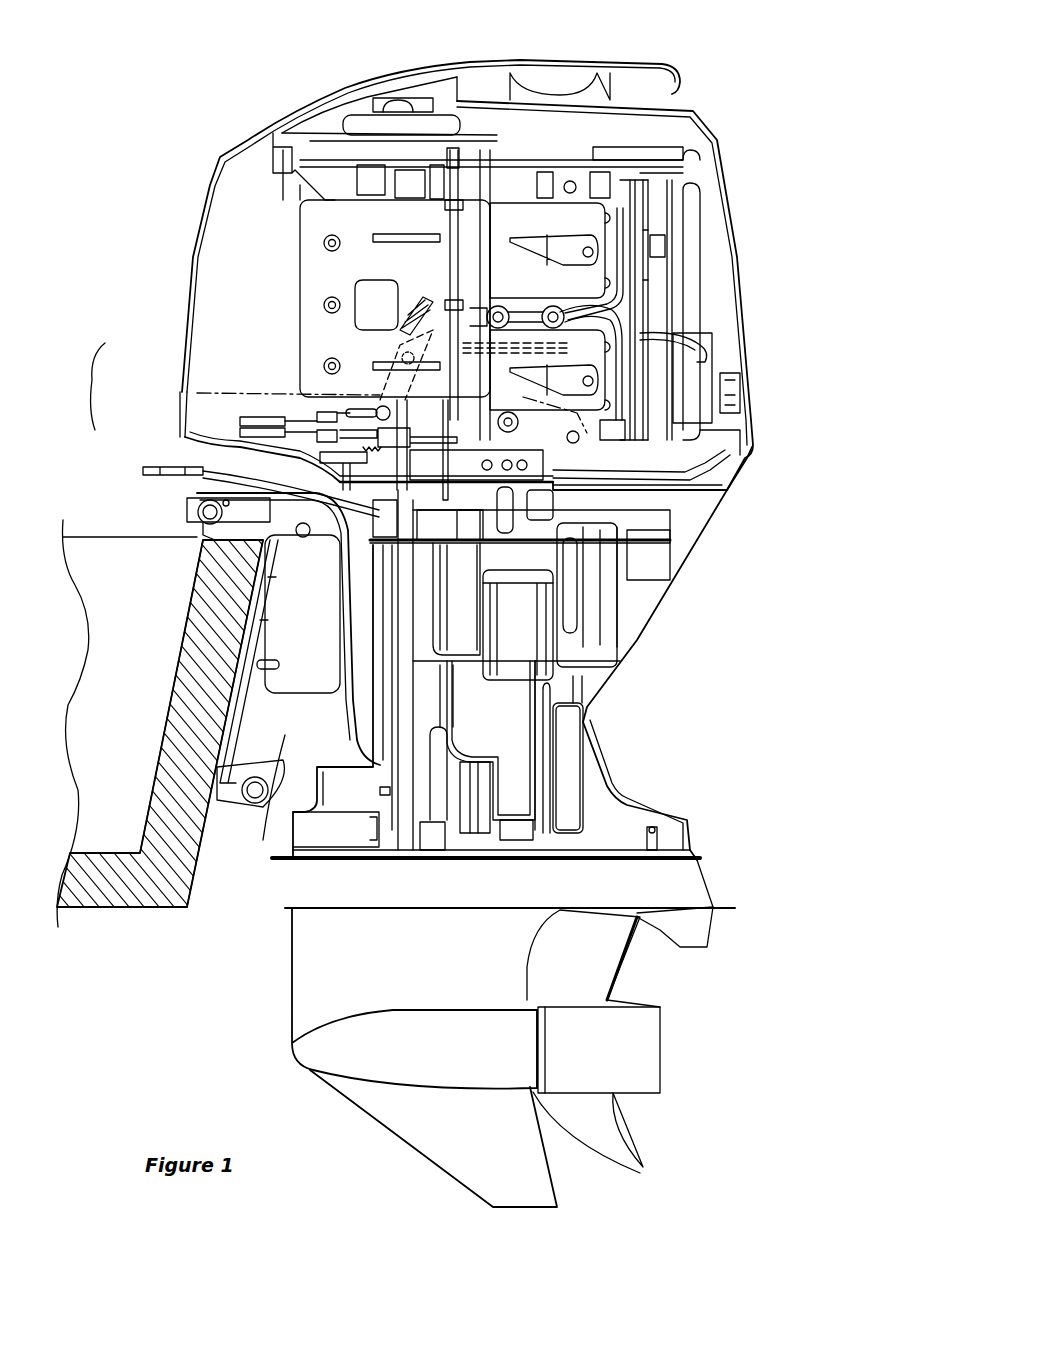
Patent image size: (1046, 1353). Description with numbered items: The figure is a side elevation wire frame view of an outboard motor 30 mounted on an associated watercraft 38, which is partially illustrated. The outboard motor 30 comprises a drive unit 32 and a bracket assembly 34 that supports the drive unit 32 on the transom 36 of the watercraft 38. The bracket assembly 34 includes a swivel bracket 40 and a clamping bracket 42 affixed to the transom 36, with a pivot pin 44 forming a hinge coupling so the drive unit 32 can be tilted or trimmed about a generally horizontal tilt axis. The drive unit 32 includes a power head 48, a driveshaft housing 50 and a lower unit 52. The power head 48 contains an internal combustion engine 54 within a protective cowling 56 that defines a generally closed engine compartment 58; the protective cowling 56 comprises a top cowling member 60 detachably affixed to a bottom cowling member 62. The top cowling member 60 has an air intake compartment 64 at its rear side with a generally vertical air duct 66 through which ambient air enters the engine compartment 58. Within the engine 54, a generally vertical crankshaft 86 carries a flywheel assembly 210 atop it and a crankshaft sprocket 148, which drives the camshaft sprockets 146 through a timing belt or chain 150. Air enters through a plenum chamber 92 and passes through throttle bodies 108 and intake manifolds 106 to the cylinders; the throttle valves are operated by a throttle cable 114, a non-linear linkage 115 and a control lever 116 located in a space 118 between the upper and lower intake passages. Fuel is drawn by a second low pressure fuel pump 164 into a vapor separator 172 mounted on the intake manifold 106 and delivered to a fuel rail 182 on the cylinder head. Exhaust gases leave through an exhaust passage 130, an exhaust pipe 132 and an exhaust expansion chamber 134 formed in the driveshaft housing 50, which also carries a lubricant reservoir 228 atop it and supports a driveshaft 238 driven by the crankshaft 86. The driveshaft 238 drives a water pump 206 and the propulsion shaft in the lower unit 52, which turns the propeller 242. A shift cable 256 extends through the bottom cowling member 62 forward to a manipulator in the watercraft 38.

The outboard motor 30 is at (747, 140).
The drive unit 32 is at (710, 553).
The bracket assembly 34 is at (234, 822).
The transom 36 is at (183, 703).
The watercraft 38 is at (100, 537).
The swivel bracket 40 is at (350, 563).
The clamping bracket 42 is at (283, 737).
The pivot pin 44 is at (200, 512).
The power head 48 is at (738, 208).
The driveshaft housing 50 is at (600, 753).
The lower unit 52 is at (307, 987).
The internal combustion engine 54 is at (714, 312).
The protective cowling 56 is at (71, 386).
The engine compartment 58 is at (255, 262).
The top cowling member 60 is at (182, 355).
The bottom cowling member 62 is at (182, 413).
The air intake compartment 64 is at (637, 83).
The air duct 66 is at (580, 93).
The crankshaft 86 is at (403, 103).
The plenum chamber 92 is at (320, 328).
The intake manifold 106 is at (580, 220).
The throttle body 108 is at (455, 218).
The throttle cable 114 is at (252, 420).
The non-linear linkage 115 is at (368, 388).
The control lever 116 is at (437, 293).
The space 118 is at (380, 303).
The exhaust passage 130 is at (520, 510).
The exhaust pipe 132 is at (510, 643).
The exhaust expansion chamber 134 is at (530, 752).
The camshaft sprocket 146 is at (670, 147).
The crankshaft sprocket 148 is at (390, 163).
The timing belt or chain 150 is at (523, 160).
The second low pressure fuel pump 164 is at (697, 360).
The vapor separator 172 is at (550, 373).
The fuel rail 182 is at (637, 223).
The water pump 206 is at (423, 837).
The flywheel assembly 210 is at (353, 133).
The lubricant reservoir 228 is at (597, 630).
The driveshaft 238 is at (403, 603).
The propeller 242 is at (613, 1127).
The shift cable 256 is at (240, 432).